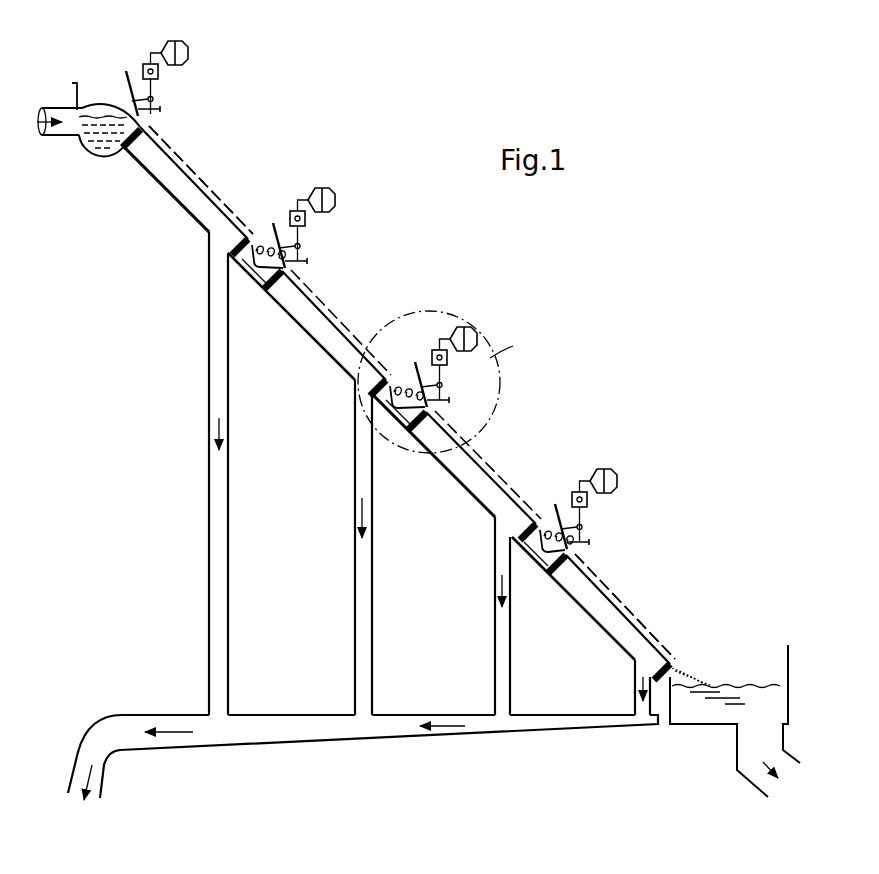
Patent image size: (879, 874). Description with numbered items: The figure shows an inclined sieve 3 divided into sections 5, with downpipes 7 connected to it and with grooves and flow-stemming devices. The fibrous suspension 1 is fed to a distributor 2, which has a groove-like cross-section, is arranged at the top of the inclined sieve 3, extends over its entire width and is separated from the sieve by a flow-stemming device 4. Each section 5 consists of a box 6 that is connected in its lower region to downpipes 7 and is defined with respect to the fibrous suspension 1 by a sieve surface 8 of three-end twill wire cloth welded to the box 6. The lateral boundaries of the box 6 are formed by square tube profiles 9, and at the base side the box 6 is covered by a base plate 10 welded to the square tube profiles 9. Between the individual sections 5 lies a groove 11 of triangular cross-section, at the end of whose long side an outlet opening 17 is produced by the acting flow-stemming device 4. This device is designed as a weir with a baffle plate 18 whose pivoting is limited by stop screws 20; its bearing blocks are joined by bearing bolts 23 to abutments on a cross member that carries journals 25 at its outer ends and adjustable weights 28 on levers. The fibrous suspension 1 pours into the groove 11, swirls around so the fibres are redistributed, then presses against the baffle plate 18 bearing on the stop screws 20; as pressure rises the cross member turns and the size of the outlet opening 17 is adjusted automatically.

The fibrous suspension 1 is at (166, 142).
The distributor 2 is at (86, 162).
The inclined sieve 3 is at (426, 285).
The flow-stemming device 4 is at (136, 52).
The sections 5 is at (216, 191).
The box 6 is at (182, 206).
The downpipes 7 is at (208, 578).
The sieve surface 8 is at (192, 180).
The square tube profiles 9 is at (130, 152).
The base plate 10 is at (196, 219).
The groove 11 is at (256, 280).
The outlet opening 17 is at (292, 270).
The baffle plate 18 is at (126, 76).
The stop screws 20 is at (309, 261).
The bearing bolts 23 is at (153, 99).
The journals 25 is at (158, 72).
The adjustable weights 28 is at (176, 41).